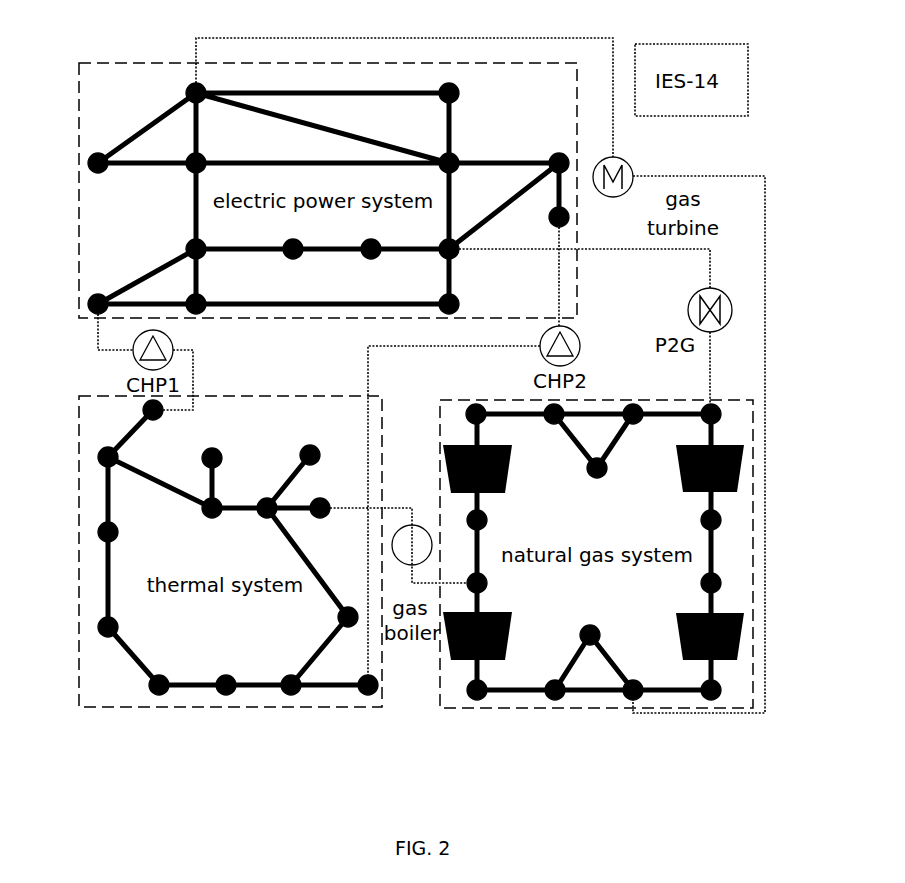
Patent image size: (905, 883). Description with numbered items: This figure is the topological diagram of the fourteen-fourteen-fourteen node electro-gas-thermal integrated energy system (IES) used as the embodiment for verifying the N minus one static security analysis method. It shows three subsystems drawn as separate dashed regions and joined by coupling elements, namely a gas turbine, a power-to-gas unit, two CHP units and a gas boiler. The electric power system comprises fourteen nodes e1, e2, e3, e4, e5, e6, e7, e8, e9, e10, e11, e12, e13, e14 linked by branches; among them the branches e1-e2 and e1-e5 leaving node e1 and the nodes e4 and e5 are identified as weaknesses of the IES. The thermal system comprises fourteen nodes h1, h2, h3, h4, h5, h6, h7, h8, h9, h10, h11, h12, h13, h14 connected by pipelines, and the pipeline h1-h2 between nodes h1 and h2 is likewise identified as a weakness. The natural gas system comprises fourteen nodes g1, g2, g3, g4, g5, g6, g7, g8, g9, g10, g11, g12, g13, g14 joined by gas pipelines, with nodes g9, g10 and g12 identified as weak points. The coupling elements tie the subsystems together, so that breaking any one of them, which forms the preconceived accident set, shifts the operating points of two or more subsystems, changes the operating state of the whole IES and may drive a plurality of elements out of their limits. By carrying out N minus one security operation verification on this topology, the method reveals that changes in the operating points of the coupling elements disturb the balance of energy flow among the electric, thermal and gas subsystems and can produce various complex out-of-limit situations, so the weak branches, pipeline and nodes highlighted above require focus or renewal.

The electric power system node e1 is at (115, 178).
The electric power system node e2 is at (177, 91).
The electric power system node e3 is at (436, 86).
The electric power system node e4 is at (464, 154).
The electric power system node e5 is at (185, 153).
The electric power system node e6 is at (206, 238).
The electric power system node e7 is at (552, 151).
The electric power system node e8 is at (543, 218).
The electric power system node e9 is at (437, 241).
The electric power system node e10 is at (371, 260).
The electric power system node e11 is at (300, 263).
The electric power system node e12 is at (108, 284).
The electric power system node e13 is at (215, 295).
The electric power system node e14 is at (433, 294).
The thermal system node h1 is at (321, 442).
The thermal system node h2 is at (263, 497).
The thermal system node h3 is at (200, 510).
The thermal system node h4 is at (218, 448).
The thermal system node h5 is at (127, 456).
The thermal system node h6 is at (337, 618).
The thermal system node h7 is at (290, 676).
The thermal system node h8 is at (228, 673).
The thermal system node h9 is at (165, 673).
The thermal system node h10 is at (128, 620).
The thermal system node h11 is at (127, 541).
The thermal system node h12 is at (335, 496).
The thermal system node h13 is at (134, 412).
The thermal system node h14 is at (355, 675).
The natural gas system node g1 is at (593, 618).
The natural gas system node g2 is at (637, 676).
The natural gas system node g3 is at (557, 676).
The natural gas system node g4 is at (725, 688).
The natural gas system node g5 is at (695, 581).
The natural gas system node g6 is at (491, 680).
The natural gas system node g7 is at (492, 583).
The natural gas system node g8 is at (725, 520).
The natural gas system node g9 is at (725, 398).
The natural gas system node g10 is at (506, 518).
The natural gas system node g11 is at (495, 423).
The natural gas system node g12 is at (648, 425).
The natural gas system node g13 is at (551, 429).
The natural gas system node g14 is at (601, 481).